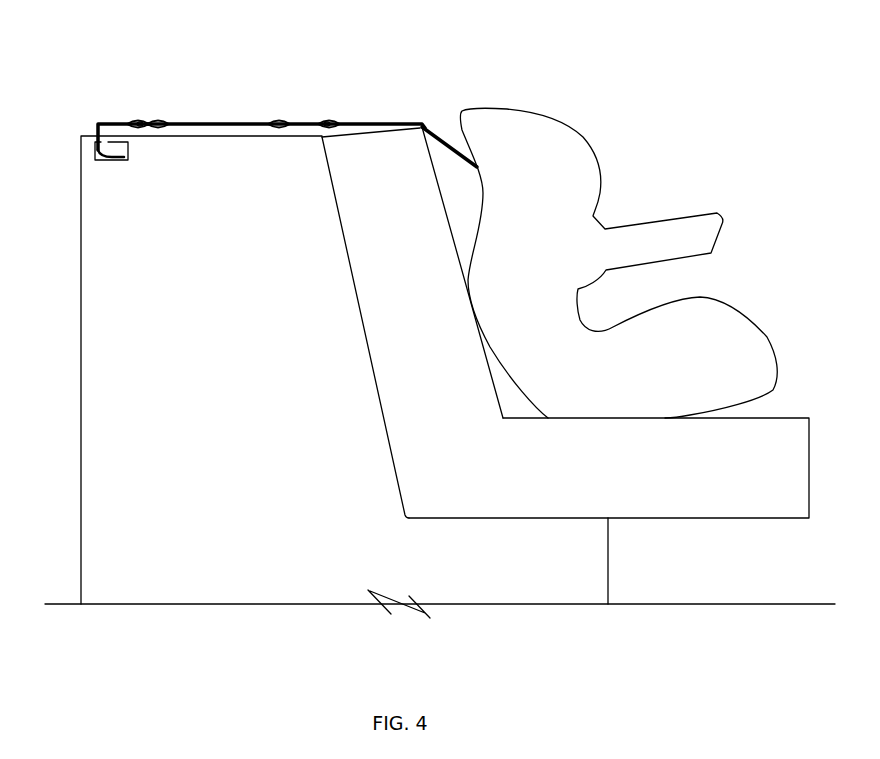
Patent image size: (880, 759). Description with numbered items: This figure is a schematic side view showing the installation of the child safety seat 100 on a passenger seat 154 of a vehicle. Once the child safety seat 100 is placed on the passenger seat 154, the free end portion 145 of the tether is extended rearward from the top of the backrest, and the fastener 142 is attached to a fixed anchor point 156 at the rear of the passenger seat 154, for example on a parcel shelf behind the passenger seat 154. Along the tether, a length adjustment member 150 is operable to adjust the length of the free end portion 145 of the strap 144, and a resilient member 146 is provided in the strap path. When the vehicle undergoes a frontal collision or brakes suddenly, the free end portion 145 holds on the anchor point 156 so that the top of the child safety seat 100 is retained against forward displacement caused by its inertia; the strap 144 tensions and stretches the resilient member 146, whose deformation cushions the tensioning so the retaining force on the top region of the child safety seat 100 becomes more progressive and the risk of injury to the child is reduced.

The child safety seat 100 is at (577, 124).
The fastener 142 is at (88, 146).
The strap 144 is at (427, 134).
The free end portion 145 is at (472, 60).
The resilient member 146 is at (312, 118).
The length adjustment member 150 is at (183, 120).
The passenger seat 154 is at (722, 518).
The anchor point 156 is at (108, 165).